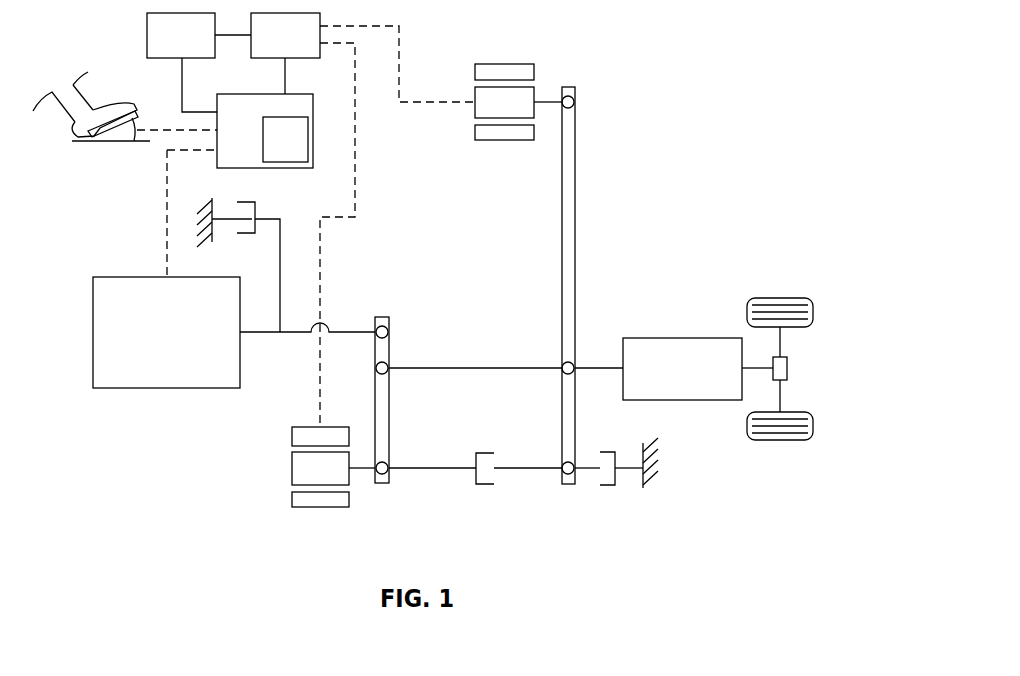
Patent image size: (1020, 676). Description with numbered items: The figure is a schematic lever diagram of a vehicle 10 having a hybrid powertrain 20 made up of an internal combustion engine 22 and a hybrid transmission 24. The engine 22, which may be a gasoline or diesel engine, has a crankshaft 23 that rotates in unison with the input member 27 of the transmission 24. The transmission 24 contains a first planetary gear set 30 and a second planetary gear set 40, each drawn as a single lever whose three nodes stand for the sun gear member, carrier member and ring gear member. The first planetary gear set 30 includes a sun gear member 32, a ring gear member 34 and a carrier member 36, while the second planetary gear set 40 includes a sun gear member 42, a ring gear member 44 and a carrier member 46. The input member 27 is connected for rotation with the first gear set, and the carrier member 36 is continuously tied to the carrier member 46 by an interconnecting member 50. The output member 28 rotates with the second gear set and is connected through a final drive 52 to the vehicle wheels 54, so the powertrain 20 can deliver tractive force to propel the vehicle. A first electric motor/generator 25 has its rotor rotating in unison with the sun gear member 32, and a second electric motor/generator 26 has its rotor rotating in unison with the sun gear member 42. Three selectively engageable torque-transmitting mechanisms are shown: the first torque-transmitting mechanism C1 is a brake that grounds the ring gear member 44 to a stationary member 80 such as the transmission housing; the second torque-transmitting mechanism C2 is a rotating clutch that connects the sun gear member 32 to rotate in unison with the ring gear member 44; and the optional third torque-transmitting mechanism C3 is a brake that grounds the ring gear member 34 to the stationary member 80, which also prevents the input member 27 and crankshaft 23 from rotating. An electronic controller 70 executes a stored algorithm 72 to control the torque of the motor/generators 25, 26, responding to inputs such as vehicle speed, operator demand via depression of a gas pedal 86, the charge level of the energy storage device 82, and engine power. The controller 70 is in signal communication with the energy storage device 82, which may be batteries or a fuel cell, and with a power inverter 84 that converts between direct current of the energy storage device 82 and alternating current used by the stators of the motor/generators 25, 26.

The vehicle 10 is at (676, 67).
The hybrid powertrain 20 is at (364, 522).
The internal combustion engine 22 is at (166, 332).
The crankshaft 23 is at (253, 333).
The hybrid transmission 24 is at (518, 530).
The first electric motor/generator 25 is at (273, 474).
The second electric motor/generator 26 is at (487, 152).
The input member 27 is at (350, 331).
The output member 28 is at (595, 367).
The first planetary gear set 30 is at (397, 417).
The sun gear member 32 is at (390, 475).
The ring gear member 34 is at (390, 331).
The carrier member 36 is at (390, 367).
The second planetary gear set 40 is at (600, 224).
The sun gear member 42 is at (574, 100).
The ring gear member 44 is at (562, 473).
The carrier member 46 is at (562, 373).
The interconnecting member 50 is at (492, 367).
The final drive 52 is at (705, 369).
The vehicle wheels 54 is at (780, 300).
The electronic controller 70 is at (262, 93).
The stored algorithm 72 is at (285, 139).
The stationary member 80 is at (205, 241).
The energy storage device 82 is at (199, 62).
The power inverter 84 is at (285, 53).
The gas pedal 86 is at (112, 143).
The first torque-transmitting mechanism C1 is at (608, 445).
The second torque-transmitting mechanism C2 is at (490, 450).
The third torque-transmitting mechanism C3 is at (264, 199).